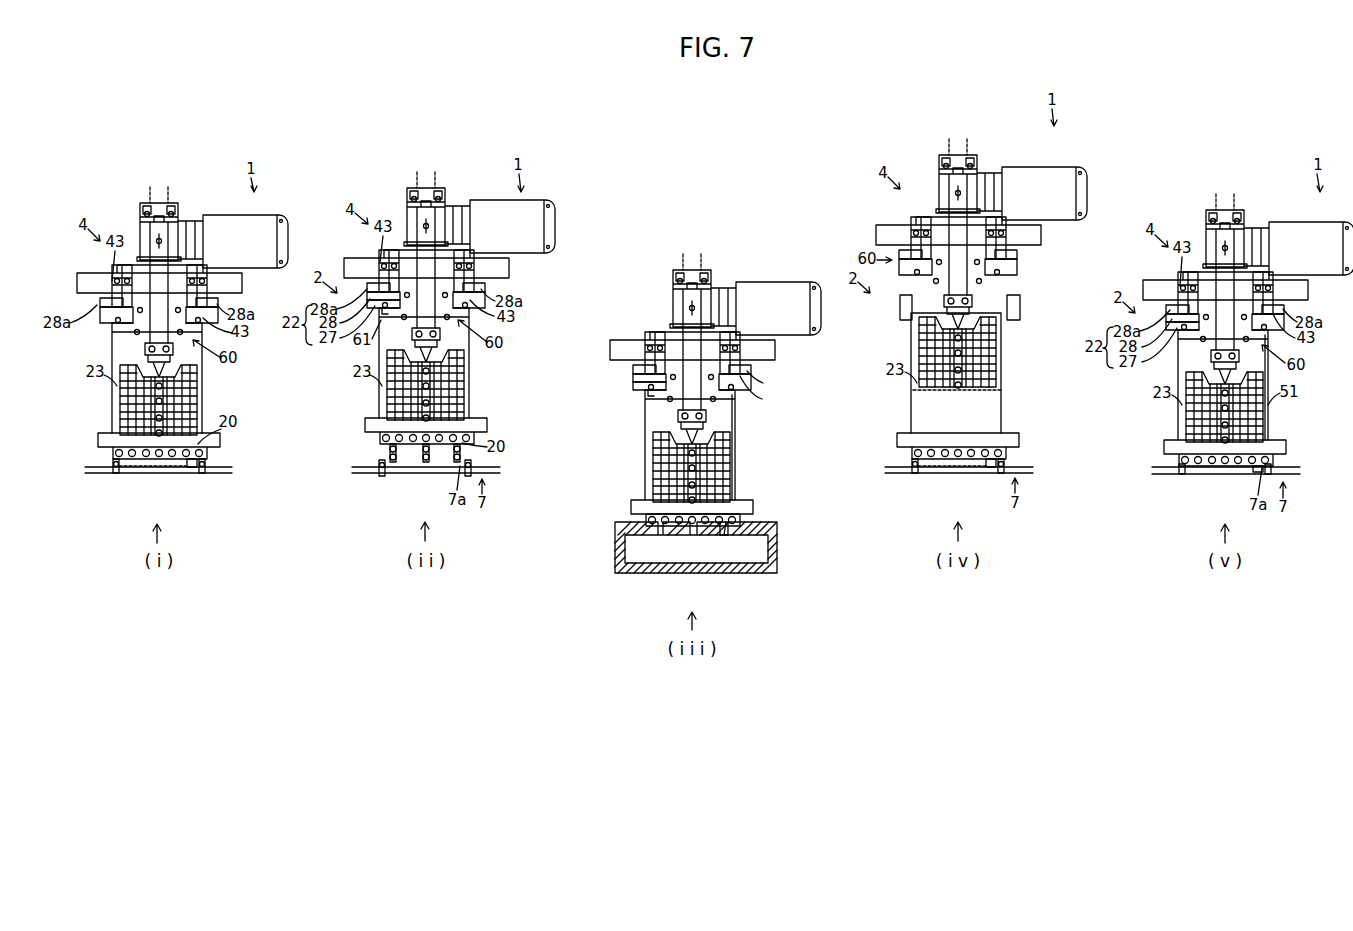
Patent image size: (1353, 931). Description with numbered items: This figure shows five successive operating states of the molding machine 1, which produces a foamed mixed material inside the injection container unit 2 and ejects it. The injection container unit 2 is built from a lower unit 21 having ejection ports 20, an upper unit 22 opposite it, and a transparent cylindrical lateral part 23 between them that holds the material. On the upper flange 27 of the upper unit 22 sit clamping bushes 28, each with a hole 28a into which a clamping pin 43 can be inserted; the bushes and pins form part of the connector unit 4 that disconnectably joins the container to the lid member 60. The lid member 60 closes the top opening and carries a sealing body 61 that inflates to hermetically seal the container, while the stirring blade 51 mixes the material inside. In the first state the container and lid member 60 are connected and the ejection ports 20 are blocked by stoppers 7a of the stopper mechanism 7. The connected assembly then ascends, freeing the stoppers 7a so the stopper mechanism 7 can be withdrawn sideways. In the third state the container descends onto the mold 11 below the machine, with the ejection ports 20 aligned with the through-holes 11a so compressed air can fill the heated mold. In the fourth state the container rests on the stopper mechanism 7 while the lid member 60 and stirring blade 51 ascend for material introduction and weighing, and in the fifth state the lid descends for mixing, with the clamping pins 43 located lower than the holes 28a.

The molding machine 1 is at (791, 252).
The injection container unit 2 is at (674, 439).
The connector unit 4 is at (696, 346).
The stopper mechanism 7 is at (218, 484).
The stopper 7a is at (192, 471).
The mold 11 is at (773, 546).
The through-hole 11a is at (723, 527).
The ejection port 20 is at (737, 507).
The lower unit 21 is at (769, 513).
The upper unit 22 is at (608, 397).
The lateral part 23 is at (648, 467).
The upper flange 27 is at (643, 388).
The clamping bush 28 is at (638, 382).
The hole 28a is at (635, 372).
The clamping pin 43 is at (648, 347).
The stirring blade 51 is at (735, 467).
The lid member 60 is at (724, 408).
The sealing body 61 is at (648, 402).